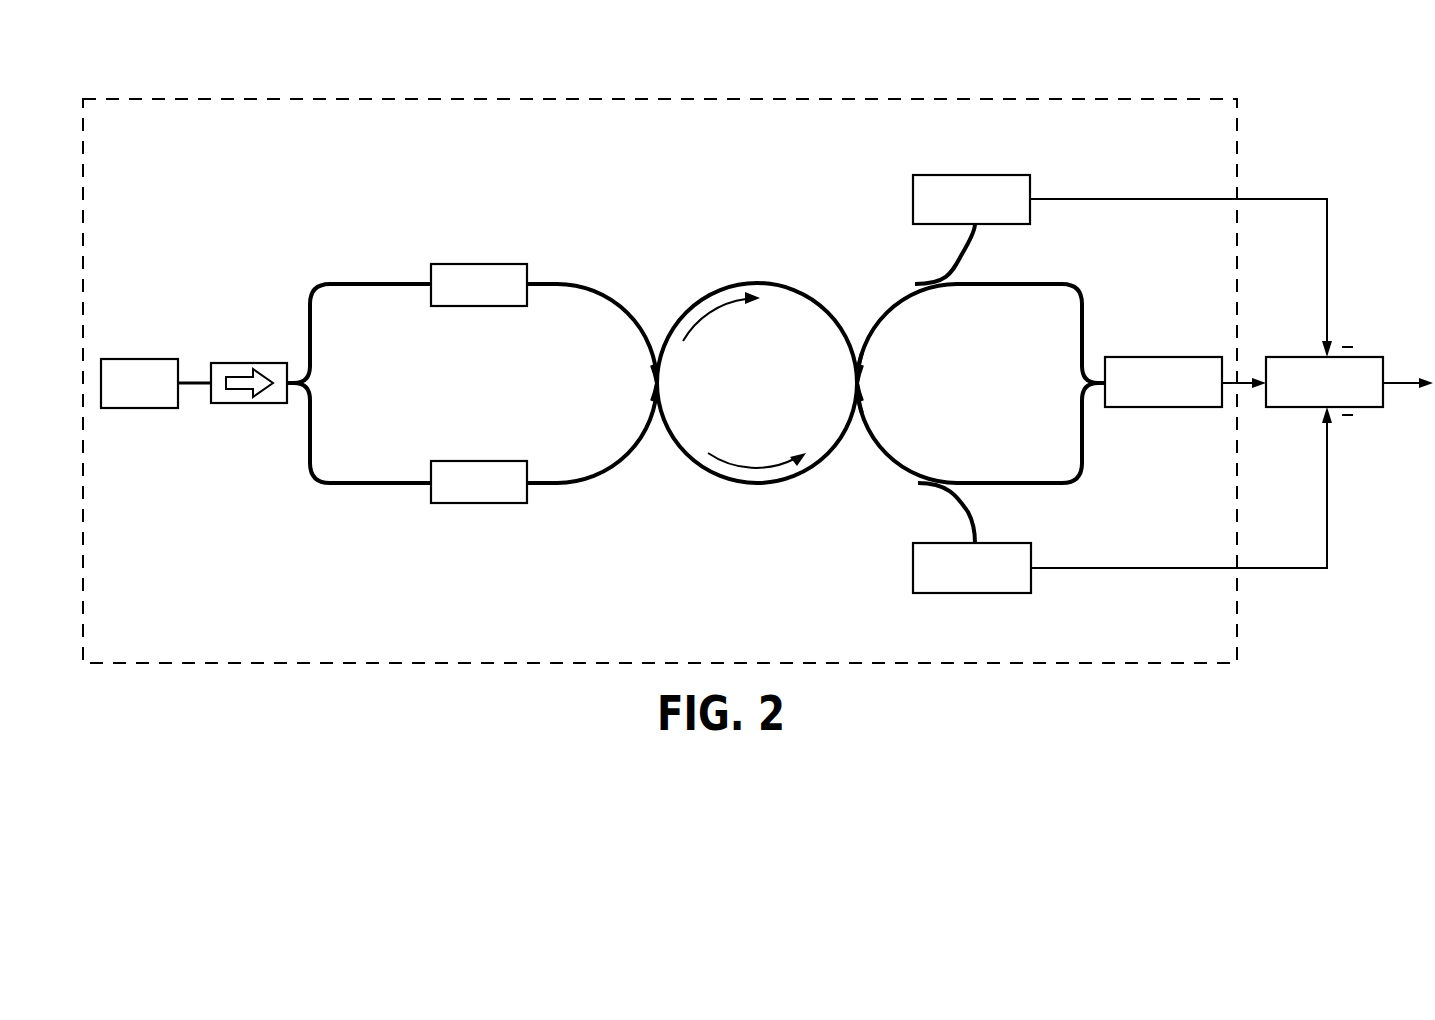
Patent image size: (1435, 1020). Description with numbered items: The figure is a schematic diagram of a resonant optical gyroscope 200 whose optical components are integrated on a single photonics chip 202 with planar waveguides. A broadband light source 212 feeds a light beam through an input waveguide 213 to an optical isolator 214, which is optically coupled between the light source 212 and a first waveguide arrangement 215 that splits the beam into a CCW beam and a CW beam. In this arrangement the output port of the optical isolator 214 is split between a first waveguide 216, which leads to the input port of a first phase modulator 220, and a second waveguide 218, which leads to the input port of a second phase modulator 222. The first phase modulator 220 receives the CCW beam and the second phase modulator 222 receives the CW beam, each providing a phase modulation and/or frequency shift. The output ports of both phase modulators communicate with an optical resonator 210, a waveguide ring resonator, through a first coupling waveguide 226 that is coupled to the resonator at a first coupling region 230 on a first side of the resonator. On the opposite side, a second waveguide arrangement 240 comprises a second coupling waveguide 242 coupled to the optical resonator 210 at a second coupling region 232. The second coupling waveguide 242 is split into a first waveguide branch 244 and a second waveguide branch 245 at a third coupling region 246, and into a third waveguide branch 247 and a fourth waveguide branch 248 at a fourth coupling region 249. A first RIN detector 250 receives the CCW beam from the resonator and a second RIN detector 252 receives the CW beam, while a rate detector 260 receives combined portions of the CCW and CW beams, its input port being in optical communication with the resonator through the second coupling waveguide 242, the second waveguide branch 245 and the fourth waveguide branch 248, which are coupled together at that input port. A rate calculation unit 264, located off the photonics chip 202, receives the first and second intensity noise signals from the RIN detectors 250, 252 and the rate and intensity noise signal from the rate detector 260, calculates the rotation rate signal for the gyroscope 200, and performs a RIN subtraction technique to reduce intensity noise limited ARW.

The resonant optical gyroscope 200 is at (686, 62).
The photonics chip 202 is at (280, 143).
The optical resonator 210 is at (768, 283).
The broadband light source 212 is at (163, 358).
The input waveguide 213 is at (188, 384).
The optical isolator 214 is at (265, 362).
The first waveguide arrangement 215 is at (399, 528).
The first waveguide 216 is at (312, 293).
The second waveguide 218 is at (310, 473).
The first phase modulator 220 is at (498, 263).
The second phase modulator 222 is at (503, 460).
The first coupling waveguide 226 is at (637, 455).
The first coupling region 230 is at (660, 375).
The second coupling region 232 is at (855, 386).
The second waveguide arrangement 240 is at (1110, 282).
The second coupling waveguide 242 is at (877, 457).
The first waveguide branch 244 is at (965, 249).
The second waveguide branch 245 is at (1023, 287).
The third coupling region 246 is at (927, 288).
The third waveguide branch 247 is at (975, 517).
The fourth waveguide branch 248 is at (1022, 482).
The fourth coupling region 249 is at (928, 480).
The first RIN detector 250 is at (975, 174).
The second RIN detector 252 is at (975, 595).
The rate detector 260 is at (1148, 356).
The rate calculation unit 264 is at (1308, 356).